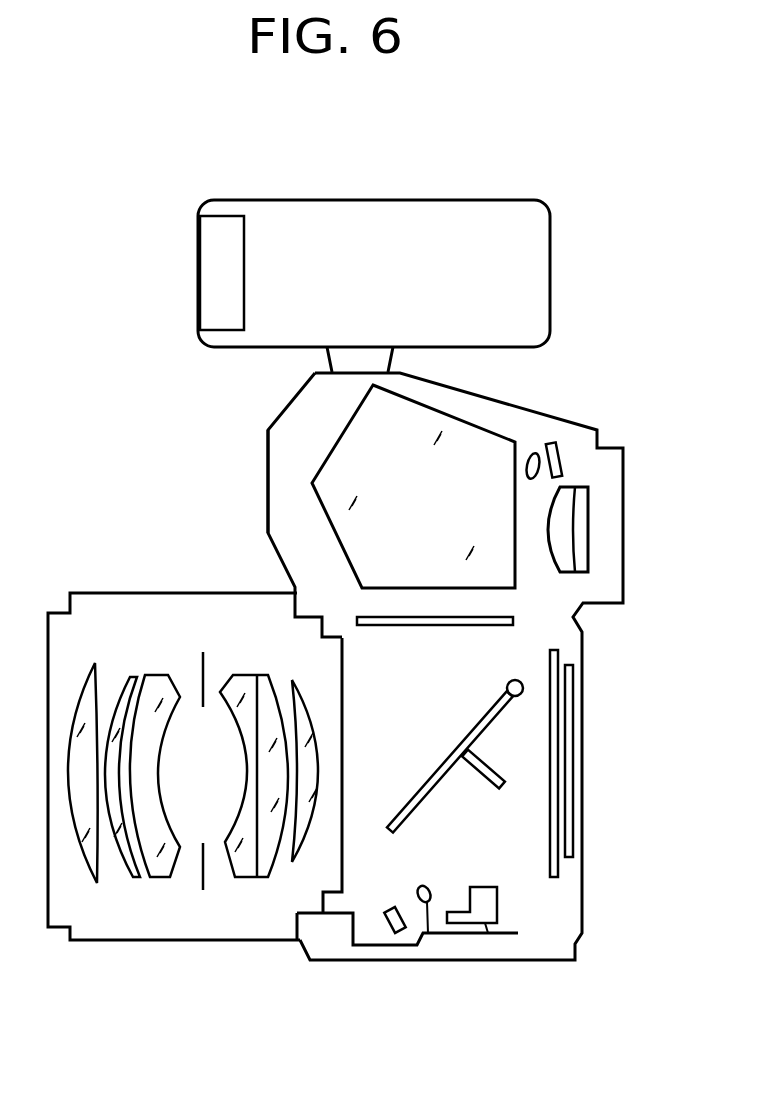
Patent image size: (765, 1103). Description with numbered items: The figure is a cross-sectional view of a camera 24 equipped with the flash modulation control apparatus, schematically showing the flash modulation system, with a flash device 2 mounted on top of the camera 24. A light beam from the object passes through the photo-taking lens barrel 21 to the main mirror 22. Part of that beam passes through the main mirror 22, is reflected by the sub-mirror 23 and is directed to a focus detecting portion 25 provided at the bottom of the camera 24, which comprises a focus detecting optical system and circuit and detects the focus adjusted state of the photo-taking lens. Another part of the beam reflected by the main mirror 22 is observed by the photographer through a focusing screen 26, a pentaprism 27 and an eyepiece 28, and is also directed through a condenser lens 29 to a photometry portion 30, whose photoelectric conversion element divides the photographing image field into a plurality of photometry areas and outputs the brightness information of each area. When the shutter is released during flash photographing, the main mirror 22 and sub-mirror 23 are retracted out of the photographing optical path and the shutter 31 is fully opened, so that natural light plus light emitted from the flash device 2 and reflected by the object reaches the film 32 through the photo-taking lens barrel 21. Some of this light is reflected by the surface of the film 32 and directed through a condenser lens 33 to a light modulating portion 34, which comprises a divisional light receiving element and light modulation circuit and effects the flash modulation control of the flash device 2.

The flash device 2 is at (430, 200).
The photo-taking lens barrel 21 is at (167, 941).
The main mirror 22 is at (503, 690).
The sub-mirror 23 is at (502, 787).
The camera 24 is at (268, 462).
The focus detecting portion 25 is at (488, 933).
The focusing screen 26 is at (367, 617).
The pentaprism 27 is at (483, 442).
The eyepiece 28 is at (583, 512).
The condenser lens 29 is at (533, 455).
The photometry portion 30 is at (560, 458).
The shutter 31 is at (558, 657).
The film 32 is at (573, 717).
The condenser lens 33 is at (428, 933).
The light modulating portion 34 is at (389, 934).